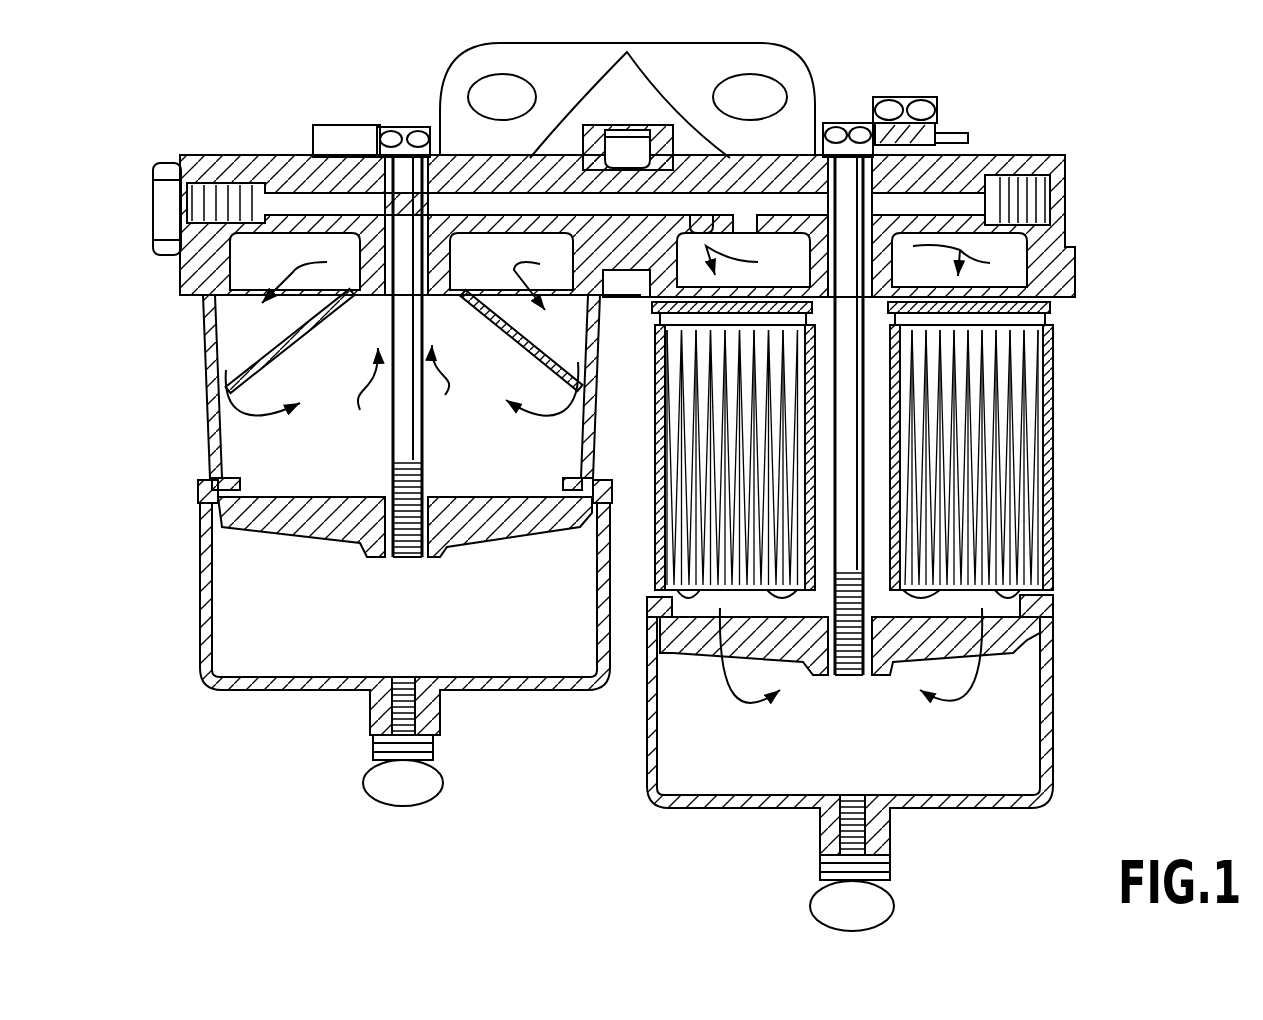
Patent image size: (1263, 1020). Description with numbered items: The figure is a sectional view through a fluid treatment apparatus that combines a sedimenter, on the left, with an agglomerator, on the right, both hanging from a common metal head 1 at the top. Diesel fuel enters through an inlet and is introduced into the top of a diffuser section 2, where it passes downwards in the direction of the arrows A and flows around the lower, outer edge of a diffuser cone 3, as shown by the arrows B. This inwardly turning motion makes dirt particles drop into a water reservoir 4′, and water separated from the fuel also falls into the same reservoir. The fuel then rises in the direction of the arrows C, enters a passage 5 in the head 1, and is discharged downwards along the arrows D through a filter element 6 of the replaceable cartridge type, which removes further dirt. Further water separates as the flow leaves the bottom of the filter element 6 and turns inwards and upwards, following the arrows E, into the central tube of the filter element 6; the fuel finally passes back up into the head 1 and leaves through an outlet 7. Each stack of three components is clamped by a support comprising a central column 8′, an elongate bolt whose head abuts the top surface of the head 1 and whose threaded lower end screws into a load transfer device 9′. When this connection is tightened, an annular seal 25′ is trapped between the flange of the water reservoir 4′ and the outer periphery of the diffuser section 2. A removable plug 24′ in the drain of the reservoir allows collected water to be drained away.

The head 1 is at (1028, 150).
The diffuser section 2 is at (205, 350).
The diffuser cone 3 is at (298, 350).
The water reservoir 4′ is at (200, 594).
The passage 5 is at (502, 203).
The filter element 6 is at (1055, 412).
The outlet 7 is at (1087, 196).
The central column 8′ is at (422, 468).
The load transfer device 9′ is at (513, 543).
The plug 24′ is at (425, 790).
The annular seal 25′ is at (200, 503).
The arrows A is at (410, 278).
The arrows B is at (512, 420).
The arrows C is at (403, 386).
The arrows D is at (858, 263).
The arrows E is at (985, 715).